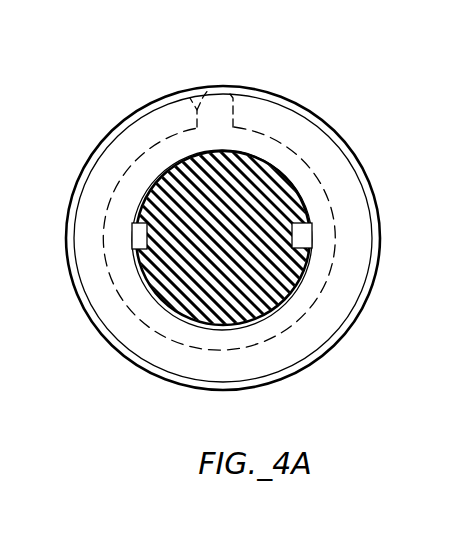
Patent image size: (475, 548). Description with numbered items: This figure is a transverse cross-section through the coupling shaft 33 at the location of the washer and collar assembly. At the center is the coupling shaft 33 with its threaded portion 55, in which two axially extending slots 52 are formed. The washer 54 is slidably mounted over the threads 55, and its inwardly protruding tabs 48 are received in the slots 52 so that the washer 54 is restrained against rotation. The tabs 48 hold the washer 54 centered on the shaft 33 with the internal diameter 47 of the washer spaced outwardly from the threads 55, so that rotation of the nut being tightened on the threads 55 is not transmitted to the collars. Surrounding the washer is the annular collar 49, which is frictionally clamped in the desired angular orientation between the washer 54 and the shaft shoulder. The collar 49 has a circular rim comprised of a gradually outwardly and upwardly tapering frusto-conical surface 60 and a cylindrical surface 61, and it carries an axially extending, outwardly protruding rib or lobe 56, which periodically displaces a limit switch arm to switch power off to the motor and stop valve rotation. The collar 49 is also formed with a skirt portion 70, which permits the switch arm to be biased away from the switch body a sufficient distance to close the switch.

The coupling shaft 33 is at (194, 322).
The internal diameter 47 is at (223, 231).
The inwardly protruding tabs 48 is at (316, 242).
The collar 49 is at (326, 112).
The axially extending slots 52 is at (228, 216).
The washer 54 is at (124, 348).
The threaded portion 55 is at (221, 227).
The rib or lobe 56 is at (193, 106).
The frusto-conical surfaces 60 is at (130, 245).
The cylindrical surfaces 61 is at (204, 238).
The skirt portion 70 is at (138, 160).